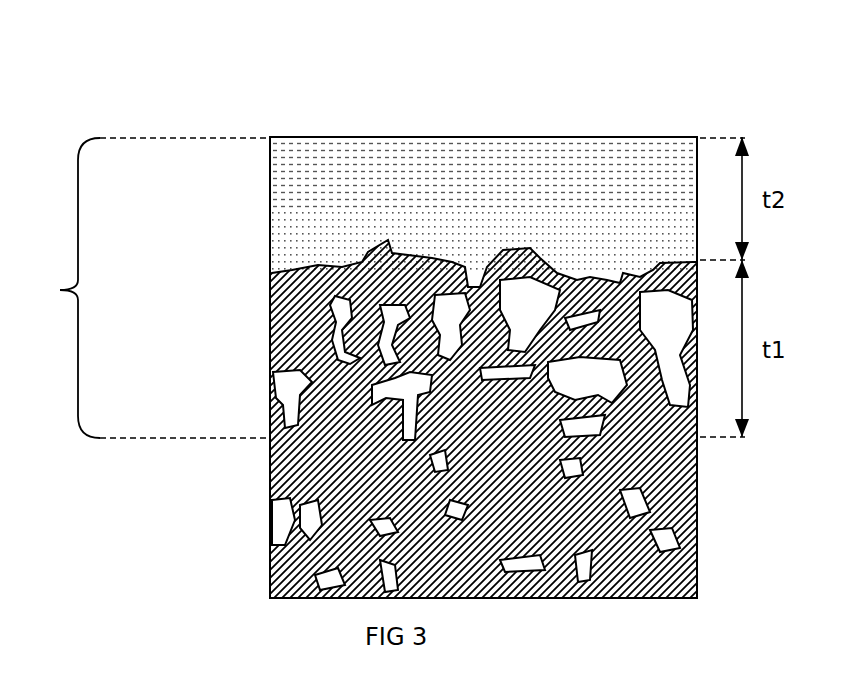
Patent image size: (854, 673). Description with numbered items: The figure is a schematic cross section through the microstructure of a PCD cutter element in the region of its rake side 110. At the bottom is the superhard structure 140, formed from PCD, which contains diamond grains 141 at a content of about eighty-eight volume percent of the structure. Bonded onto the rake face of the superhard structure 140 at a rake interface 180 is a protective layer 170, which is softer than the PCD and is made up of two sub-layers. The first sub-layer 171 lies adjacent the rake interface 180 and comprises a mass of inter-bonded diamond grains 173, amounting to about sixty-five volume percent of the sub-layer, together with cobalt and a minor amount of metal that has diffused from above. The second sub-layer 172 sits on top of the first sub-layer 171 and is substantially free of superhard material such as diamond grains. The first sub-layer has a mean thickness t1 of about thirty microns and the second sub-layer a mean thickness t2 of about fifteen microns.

The rake side 110 is at (485, 100).
The protective layer 170 is at (136, 288).
The first sub-layer 171 is at (270, 347).
The second sub-layer 172 is at (270, 200).
The inter-bonded diamond grains 173 is at (409, 434).
The rake interface 180 is at (256, 460).
The superhard structure 140 is at (270, 563).
The diamond grains 141 is at (665, 469).